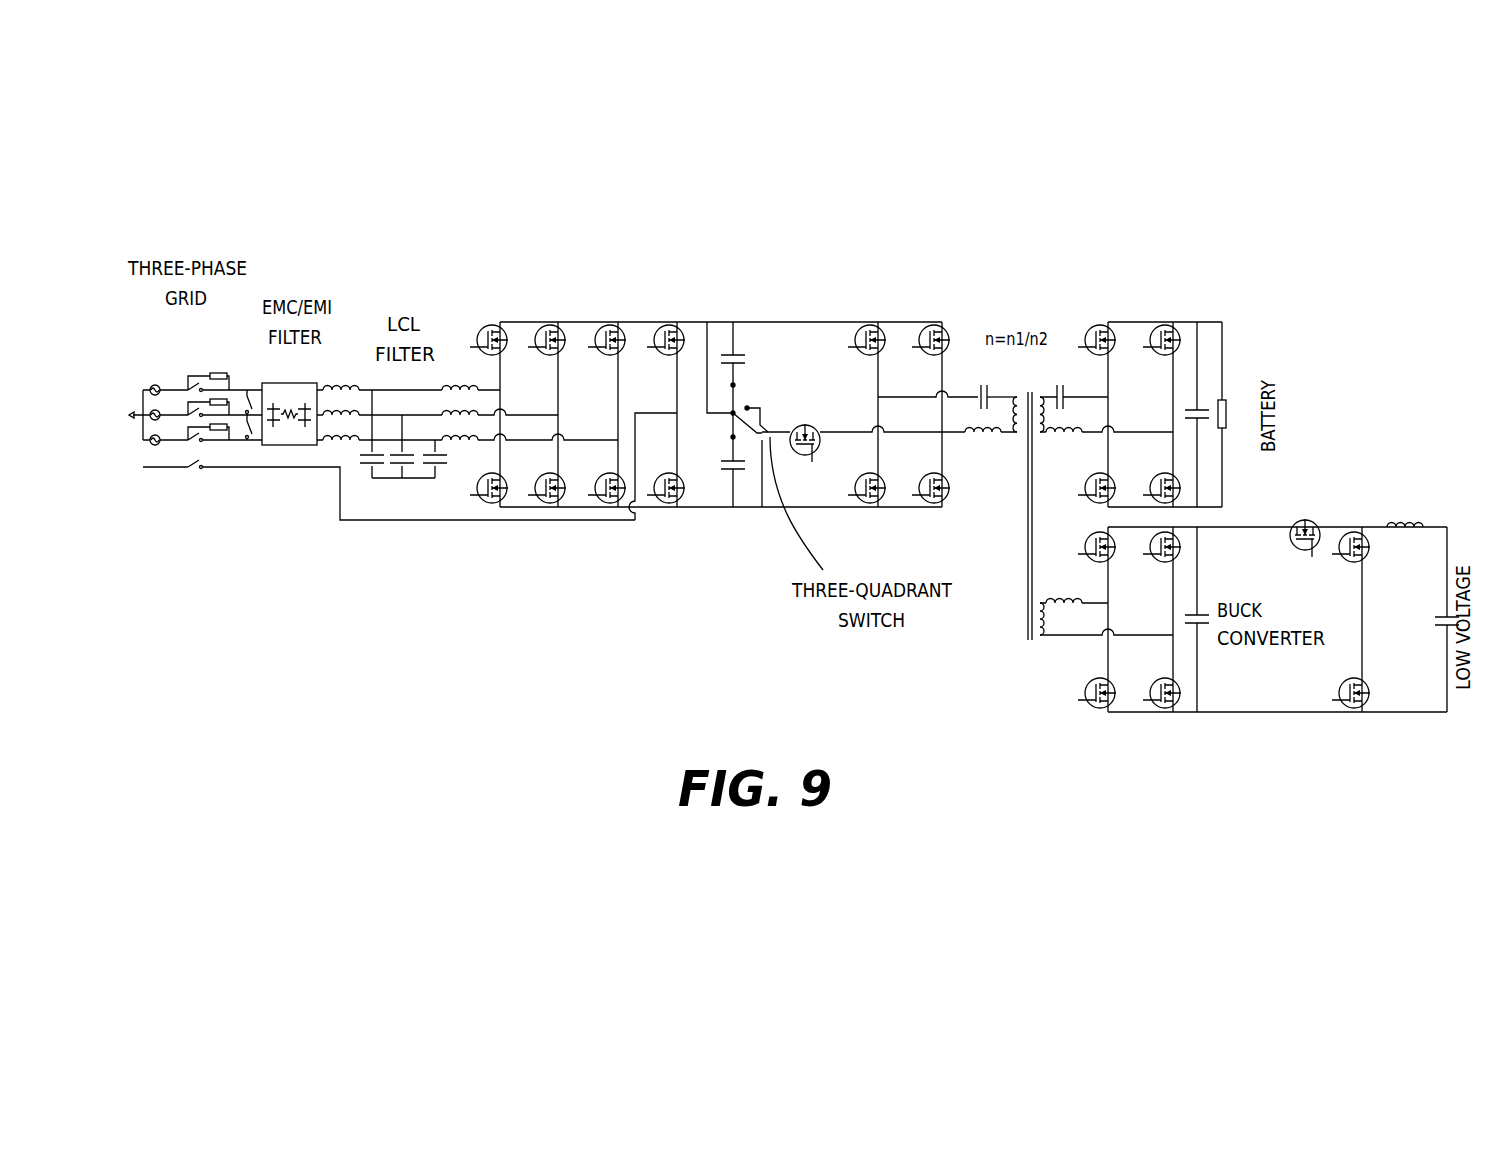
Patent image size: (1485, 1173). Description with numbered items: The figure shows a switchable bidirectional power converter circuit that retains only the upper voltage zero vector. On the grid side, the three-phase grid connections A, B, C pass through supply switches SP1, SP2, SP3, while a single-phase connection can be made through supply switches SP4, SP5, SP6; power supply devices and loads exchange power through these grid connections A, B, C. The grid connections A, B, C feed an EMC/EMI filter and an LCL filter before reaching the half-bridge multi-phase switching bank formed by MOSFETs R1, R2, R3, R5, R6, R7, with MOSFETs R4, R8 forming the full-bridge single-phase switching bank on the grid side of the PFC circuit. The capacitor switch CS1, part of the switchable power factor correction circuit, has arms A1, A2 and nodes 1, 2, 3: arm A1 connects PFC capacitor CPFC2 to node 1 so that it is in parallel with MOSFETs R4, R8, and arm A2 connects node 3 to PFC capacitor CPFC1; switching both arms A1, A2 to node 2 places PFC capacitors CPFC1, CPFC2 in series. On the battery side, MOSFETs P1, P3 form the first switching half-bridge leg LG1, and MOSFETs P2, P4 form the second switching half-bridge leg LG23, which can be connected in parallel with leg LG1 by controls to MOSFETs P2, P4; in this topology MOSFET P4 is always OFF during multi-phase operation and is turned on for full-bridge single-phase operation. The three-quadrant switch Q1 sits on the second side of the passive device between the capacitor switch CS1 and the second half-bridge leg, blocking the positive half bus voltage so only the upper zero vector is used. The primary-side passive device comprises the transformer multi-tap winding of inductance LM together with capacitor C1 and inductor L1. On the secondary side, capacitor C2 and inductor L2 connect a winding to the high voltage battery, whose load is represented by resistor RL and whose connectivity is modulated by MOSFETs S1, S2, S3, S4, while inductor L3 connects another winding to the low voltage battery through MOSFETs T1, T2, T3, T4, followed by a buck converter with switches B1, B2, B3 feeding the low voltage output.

The multi-phase grid connection A is at (150, 387).
The multi-phase grid connection B is at (150, 412).
The multi-phase grid connection C is at (150, 438).
The supply switch SP1 is at (195, 385).
The supply switch SP2 is at (190, 408).
The supply switch SP3 is at (190, 436).
The supply switch SP4 is at (195, 470).
The supply switch SP5 is at (247, 393).
The supply switch SP6 is at (247, 432).
The MOSFET R1 is at (489, 320).
The MOSFET R2 is at (543, 320).
The MOSFET R3 is at (603, 320).
The MOSFET R4 is at (662, 320).
The MOSFET R5 is at (485, 474).
The MOSFET R6 is at (543, 474).
The MOSFET R7 is at (603, 474).
The MOSFET R8 is at (662, 477).
The PFC capacitor CPFC1 is at (760, 353).
The PFC capacitor CPFC2 is at (735, 474).
The capacitor switch CS1 is at (729, 445).
The node 1 is at (716, 393).
The node 2 is at (729, 393).
The node 3 is at (753, 393).
The arm A1 is at (736, 428).
The arm A2 is at (742, 373).
The three-quadrant switch Q1 is at (852, 419).
The MOSFET P1 is at (867, 320).
The MOSFET P2 is at (931, 320).
The MOSFET P3 is at (863, 474).
The MOSFET P4 is at (944, 484).
The first switching half-bridge leg LG1 is at (866, 528).
The second switching half-bridge leg LG23 is at (943, 528).
The OFF state OFF is at (945, 497).
The capacitor C1 is at (996, 380).
The inductor L1 is at (979, 449).
The multi-tap winding inductance LM is at (1020, 434).
The capacitor C2 is at (1074, 380).
The inductor L2 is at (1106, 447).
The inductor L3 is at (1106, 619).
The MOSFET S1 is at (1097, 320).
The MOSFET S2 is at (1162, 320).
The MOSFET S3 is at (1097, 474).
The MOSFET S4 is at (1162, 474).
The load resistor RL is at (1237, 414).
The MOSFET T1 is at (1086, 550).
The MOSFET T2 is at (1150, 550).
The MOSFET T3 is at (1085, 689).
The MOSFET T4 is at (1150, 689).
The buck switch B1 is at (1306, 526).
The buck switch B2 is at (1351, 529).
The buck switch B3 is at (1351, 678).